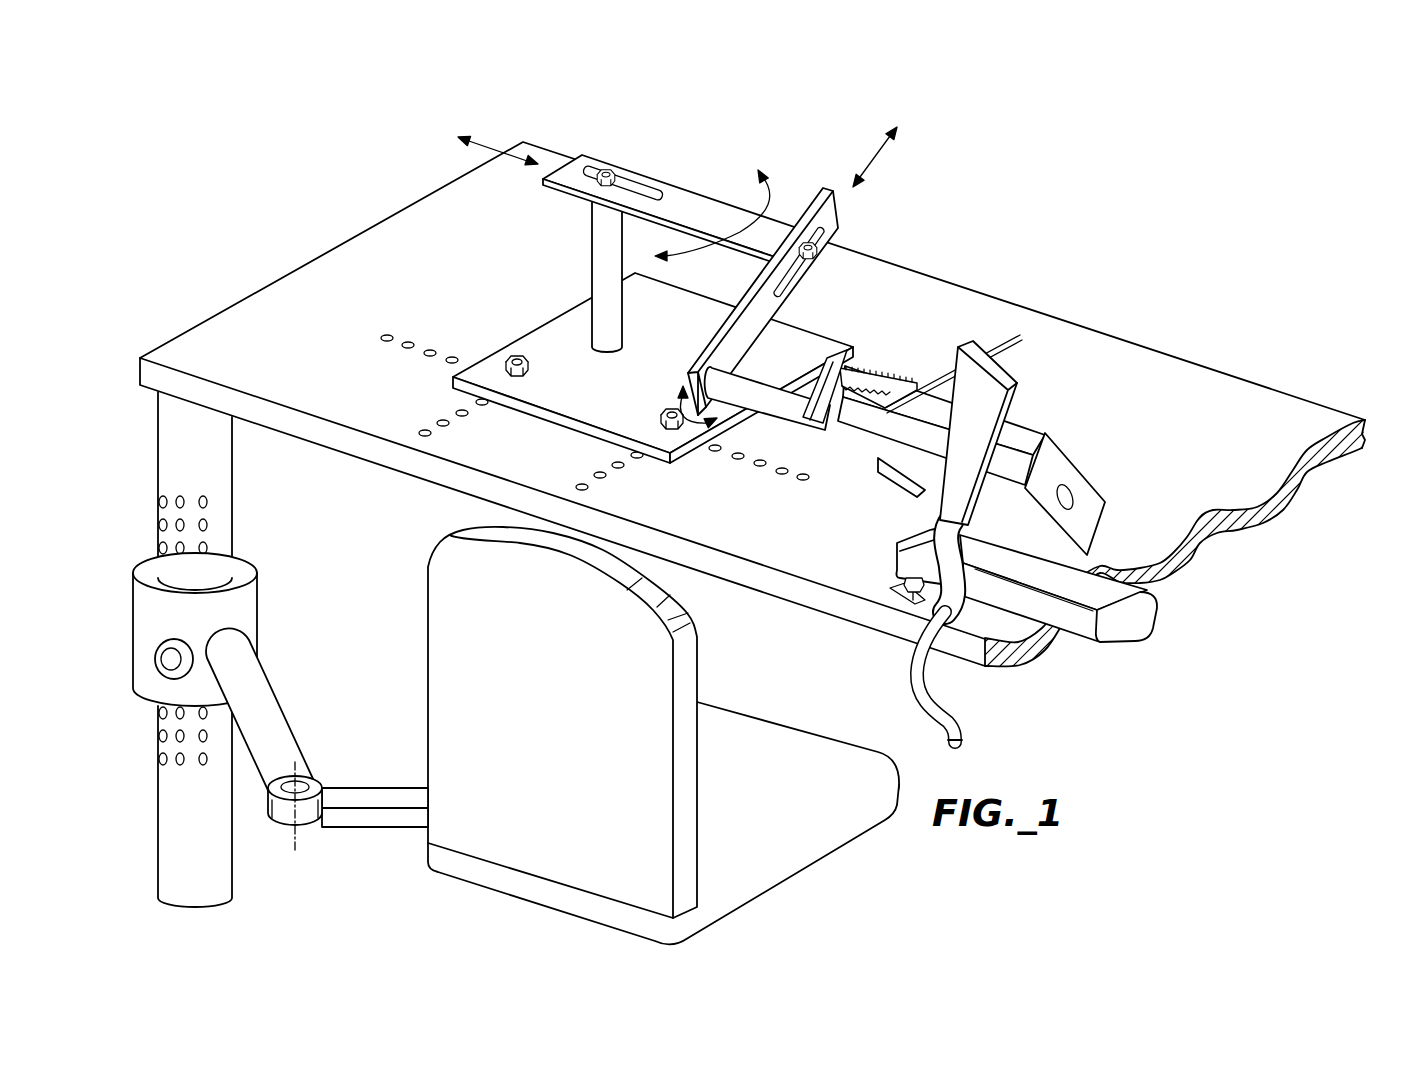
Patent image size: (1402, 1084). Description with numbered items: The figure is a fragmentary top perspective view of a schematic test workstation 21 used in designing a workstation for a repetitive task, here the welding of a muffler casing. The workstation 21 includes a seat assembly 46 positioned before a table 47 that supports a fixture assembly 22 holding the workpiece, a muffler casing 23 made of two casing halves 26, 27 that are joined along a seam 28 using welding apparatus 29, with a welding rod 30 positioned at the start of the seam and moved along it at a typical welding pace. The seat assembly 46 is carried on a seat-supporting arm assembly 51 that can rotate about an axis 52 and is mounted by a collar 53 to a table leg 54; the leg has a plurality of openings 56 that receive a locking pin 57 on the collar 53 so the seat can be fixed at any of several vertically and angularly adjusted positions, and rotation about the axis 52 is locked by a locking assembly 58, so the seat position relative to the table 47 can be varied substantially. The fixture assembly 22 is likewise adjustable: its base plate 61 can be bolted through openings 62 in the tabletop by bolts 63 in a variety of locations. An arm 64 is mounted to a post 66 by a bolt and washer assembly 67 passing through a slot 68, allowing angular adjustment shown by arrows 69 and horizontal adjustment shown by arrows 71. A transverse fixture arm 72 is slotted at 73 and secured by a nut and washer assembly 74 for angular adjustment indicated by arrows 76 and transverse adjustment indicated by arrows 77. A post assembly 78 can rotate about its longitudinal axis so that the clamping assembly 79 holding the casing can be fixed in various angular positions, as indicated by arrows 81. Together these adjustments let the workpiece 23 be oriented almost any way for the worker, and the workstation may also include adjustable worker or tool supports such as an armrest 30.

The test workstation 21 is at (1050, 212).
The fixture assembly 22 is at (773, 132).
The muffler casing 23 is at (1052, 420).
The casing half 26 is at (858, 384).
The casing half 27 is at (930, 498).
The seam 28 is at (882, 482).
The welding apparatus 29 is at (1008, 395).
The welding rod 30 is at (948, 352).
The seat assembly 46 is at (531, 802).
The table 47 is at (240, 322).
The seat-supporting arm assembly 51 is at (278, 718).
The axis 52 is at (300, 840).
The collar 53 is at (248, 615).
The table leg 54 is at (222, 462).
The openings 56 is at (160, 547).
The locking pin 57 is at (165, 657).
The locking assembly 58 is at (279, 825).
The base plate 61 is at (572, 330).
The openings 62 is at (434, 350).
The bolts 63 is at (530, 366).
The arm 64 is at (690, 203).
The post 66 is at (600, 262).
The bolt and washer assembly 67 is at (610, 164).
The slot 68 is at (650, 186).
The arrows 69 is at (788, 180).
The arrows 71 is at (490, 140).
The transverse fixture arm 72 is at (763, 313).
The slot 73 is at (830, 232).
The nut and washer assembly 74 is at (838, 248).
The arrows 76 is at (680, 378).
The arrows 77 is at (880, 155).
The post assembly 78 is at (765, 380).
The clamping assembly 79 is at (907, 395).
The arrows 81 is at (1040, 522).